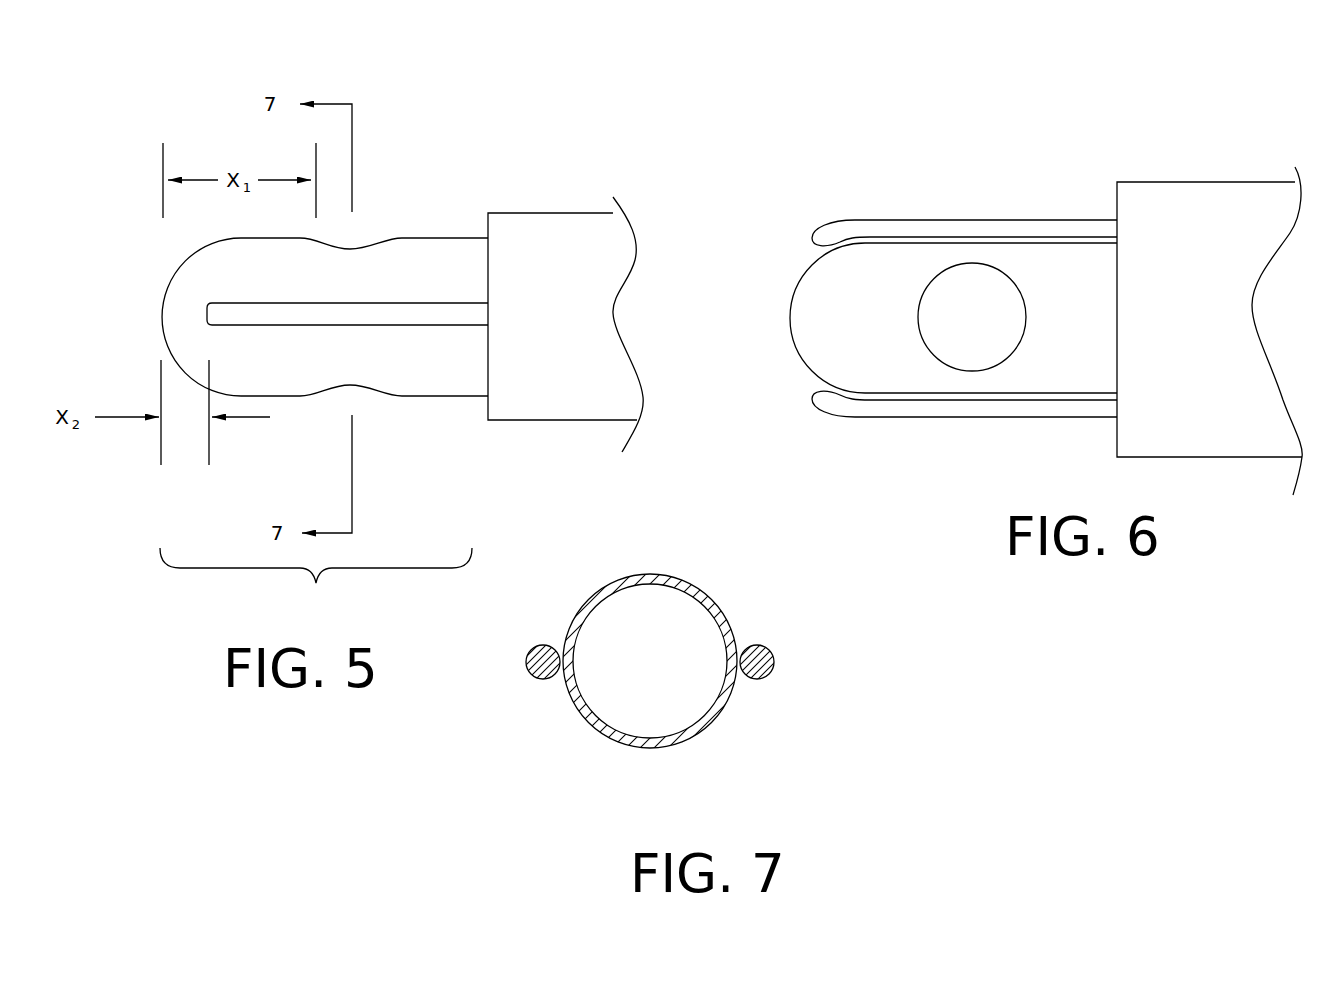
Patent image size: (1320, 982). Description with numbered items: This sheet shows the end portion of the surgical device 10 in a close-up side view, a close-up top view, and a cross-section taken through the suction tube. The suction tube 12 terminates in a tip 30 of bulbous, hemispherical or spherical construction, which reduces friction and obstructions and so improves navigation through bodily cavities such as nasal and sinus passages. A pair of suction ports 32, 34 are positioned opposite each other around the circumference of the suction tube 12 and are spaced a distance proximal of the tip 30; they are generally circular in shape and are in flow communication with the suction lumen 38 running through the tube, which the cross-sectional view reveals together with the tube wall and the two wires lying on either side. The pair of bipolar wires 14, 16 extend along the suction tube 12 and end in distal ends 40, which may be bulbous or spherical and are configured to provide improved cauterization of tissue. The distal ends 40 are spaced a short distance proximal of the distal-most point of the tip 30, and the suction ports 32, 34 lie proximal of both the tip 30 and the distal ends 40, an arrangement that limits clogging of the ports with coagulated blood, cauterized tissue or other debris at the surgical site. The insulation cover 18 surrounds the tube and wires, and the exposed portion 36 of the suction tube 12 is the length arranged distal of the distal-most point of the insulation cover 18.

In FIG. 5, the surgical device 10 is at (560, 162).
In FIG. 6, the surgical device 10 is at (1187, 142).
In FIG. 5, the suction tube 12 is at (467, 232).
In FIG. 6, the suction tube 12 is at (798, 370).
In FIG. 7, the suction tube 12 is at (668, 572).
In FIG. 6, the bipolar wire 14 is at (925, 225).
In FIG. 7, the bipolar wire 14 is at (760, 645).
In FIG. 5, the bipolar wire 16 is at (428, 315).
In FIG. 6, the bipolar wire 16 is at (897, 408).
In FIG. 7, the bipolar wire 16 is at (542, 645).
In FIG. 5, the insulation cover 18 is at (585, 213).
In FIG. 6, the insulation cover 18 is at (1225, 190).
In FIG. 5, the tip 30 is at (177, 290).
In FIG. 6, the tip 30 is at (805, 317).
In FIG. 5, the suction port 32 is at (367, 247).
In FIG. 6, the suction port 32 is at (972, 342).
In FIG. 7, the suction port 32 is at (653, 580).
In FIG. 5, the suction port 34 is at (372, 387).
In FIG. 7, the suction port 34 is at (648, 743).
In FIG. 5, the exposed portion 36 is at (316, 581).
In FIG. 7, the suction lumen 38 is at (668, 635).
In FIG. 5, the distal ends 40 is at (217, 315).
In FIG. 6, the distal ends 40 is at (833, 232).